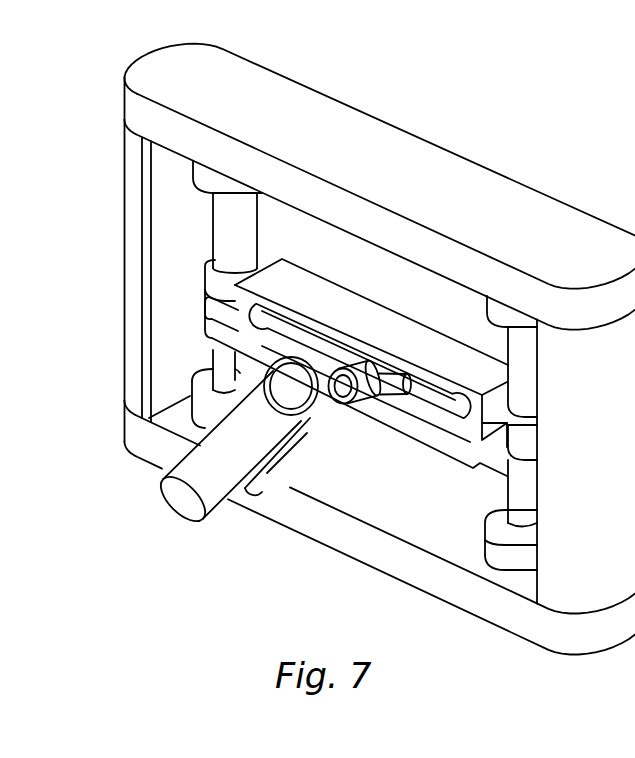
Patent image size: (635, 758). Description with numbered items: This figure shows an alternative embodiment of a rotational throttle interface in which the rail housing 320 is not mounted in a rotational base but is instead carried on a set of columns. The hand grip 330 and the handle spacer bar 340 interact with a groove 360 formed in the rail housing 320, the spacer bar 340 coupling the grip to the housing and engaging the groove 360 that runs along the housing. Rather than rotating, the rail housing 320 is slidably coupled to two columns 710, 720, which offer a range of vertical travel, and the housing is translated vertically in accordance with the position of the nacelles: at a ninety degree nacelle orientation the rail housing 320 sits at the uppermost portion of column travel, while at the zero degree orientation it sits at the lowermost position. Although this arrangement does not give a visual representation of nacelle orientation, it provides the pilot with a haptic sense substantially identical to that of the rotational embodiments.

The rail housing 320 is at (346, 303).
The hand grip 330 is at (154, 457).
The handle spacer bar 340 is at (283, 473).
The groove 360 is at (433, 417).
The column 710 is at (523, 367).
The column 720 is at (236, 237).